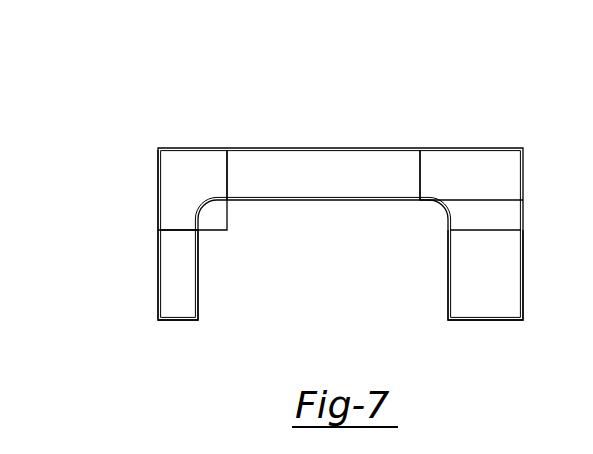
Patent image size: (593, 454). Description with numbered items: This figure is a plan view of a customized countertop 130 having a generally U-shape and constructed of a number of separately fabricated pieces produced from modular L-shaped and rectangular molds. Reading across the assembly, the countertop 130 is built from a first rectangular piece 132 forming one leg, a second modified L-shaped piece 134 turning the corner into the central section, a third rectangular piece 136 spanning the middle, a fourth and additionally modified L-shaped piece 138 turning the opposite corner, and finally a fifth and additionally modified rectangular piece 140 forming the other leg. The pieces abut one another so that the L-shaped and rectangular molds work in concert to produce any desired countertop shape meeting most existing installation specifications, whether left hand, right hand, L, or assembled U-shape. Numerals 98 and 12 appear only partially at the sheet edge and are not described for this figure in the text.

The customized countertop 130 is at (208, 123).
The first rectangular piece 132 is at (175, 298).
The second modified L-shaped piece 134 is at (180, 198).
The third rectangular piece 136 is at (298, 175).
The fourth and additionally modified L-shaped piece 138 is at (465, 167).
The fifth and additionally modified rectangular piece 140 is at (488, 300).
The adjacent component 98 is at (592, 3).
The housing 12 is at (585, 78).